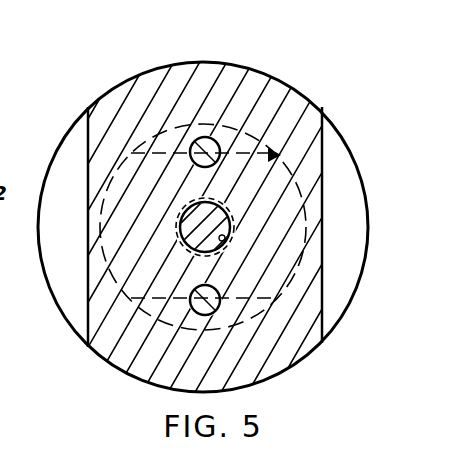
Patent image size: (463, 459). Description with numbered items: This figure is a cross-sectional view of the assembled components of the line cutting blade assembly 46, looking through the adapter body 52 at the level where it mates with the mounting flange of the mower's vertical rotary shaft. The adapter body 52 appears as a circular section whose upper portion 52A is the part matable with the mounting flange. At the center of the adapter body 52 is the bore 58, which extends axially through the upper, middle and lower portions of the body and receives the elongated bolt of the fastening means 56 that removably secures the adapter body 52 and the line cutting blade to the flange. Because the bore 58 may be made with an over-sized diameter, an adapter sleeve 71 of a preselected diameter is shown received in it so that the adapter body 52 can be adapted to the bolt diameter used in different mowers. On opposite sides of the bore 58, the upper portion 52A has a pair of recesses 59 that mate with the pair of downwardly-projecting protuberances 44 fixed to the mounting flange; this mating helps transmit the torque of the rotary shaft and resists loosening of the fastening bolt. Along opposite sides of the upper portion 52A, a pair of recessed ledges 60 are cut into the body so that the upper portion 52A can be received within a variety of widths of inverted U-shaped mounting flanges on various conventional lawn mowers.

The protuberances 44 is at (204, 137).
The line cutting blade assembly 46 is at (315, 72).
The adapter body 52 is at (58, 144).
The upper portion 52A is at (264, 74).
The fastening means 56 is at (178, 232).
The bore 58 is at (229, 246).
The recesses 59 is at (197, 145).
The recessed ledges 60 is at (78, 132).
The adapter sleeve 71 is at (226, 207).